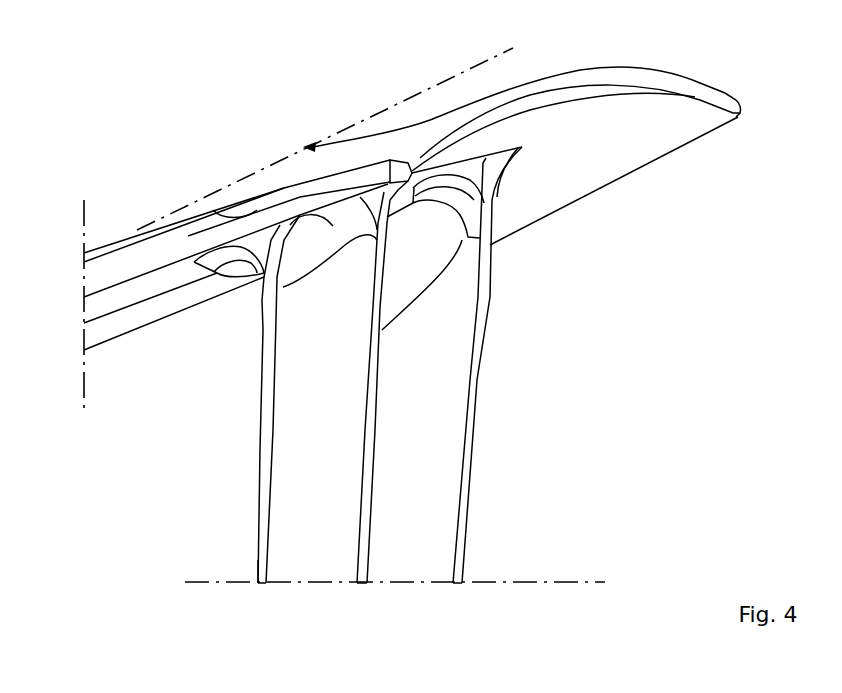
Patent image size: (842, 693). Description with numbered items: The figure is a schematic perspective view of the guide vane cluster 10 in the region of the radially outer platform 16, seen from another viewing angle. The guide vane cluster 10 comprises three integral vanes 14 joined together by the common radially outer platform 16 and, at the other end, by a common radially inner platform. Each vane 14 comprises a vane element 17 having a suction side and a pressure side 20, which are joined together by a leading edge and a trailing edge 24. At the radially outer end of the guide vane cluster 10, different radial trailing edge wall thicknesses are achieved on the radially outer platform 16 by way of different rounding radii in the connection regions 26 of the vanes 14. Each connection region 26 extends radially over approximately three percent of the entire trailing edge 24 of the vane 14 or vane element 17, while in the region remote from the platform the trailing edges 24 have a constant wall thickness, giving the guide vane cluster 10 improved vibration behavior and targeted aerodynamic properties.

The guide vane cluster 10 is at (112, 85).
The vane 14 is at (190, 222).
The radially outer platform 16 is at (672, 113).
The vane element 17 is at (321, 330).
The pressure side 20 is at (163, 518).
The trailing edge 24 is at (263, 540).
The connection region 26 is at (263, 220).